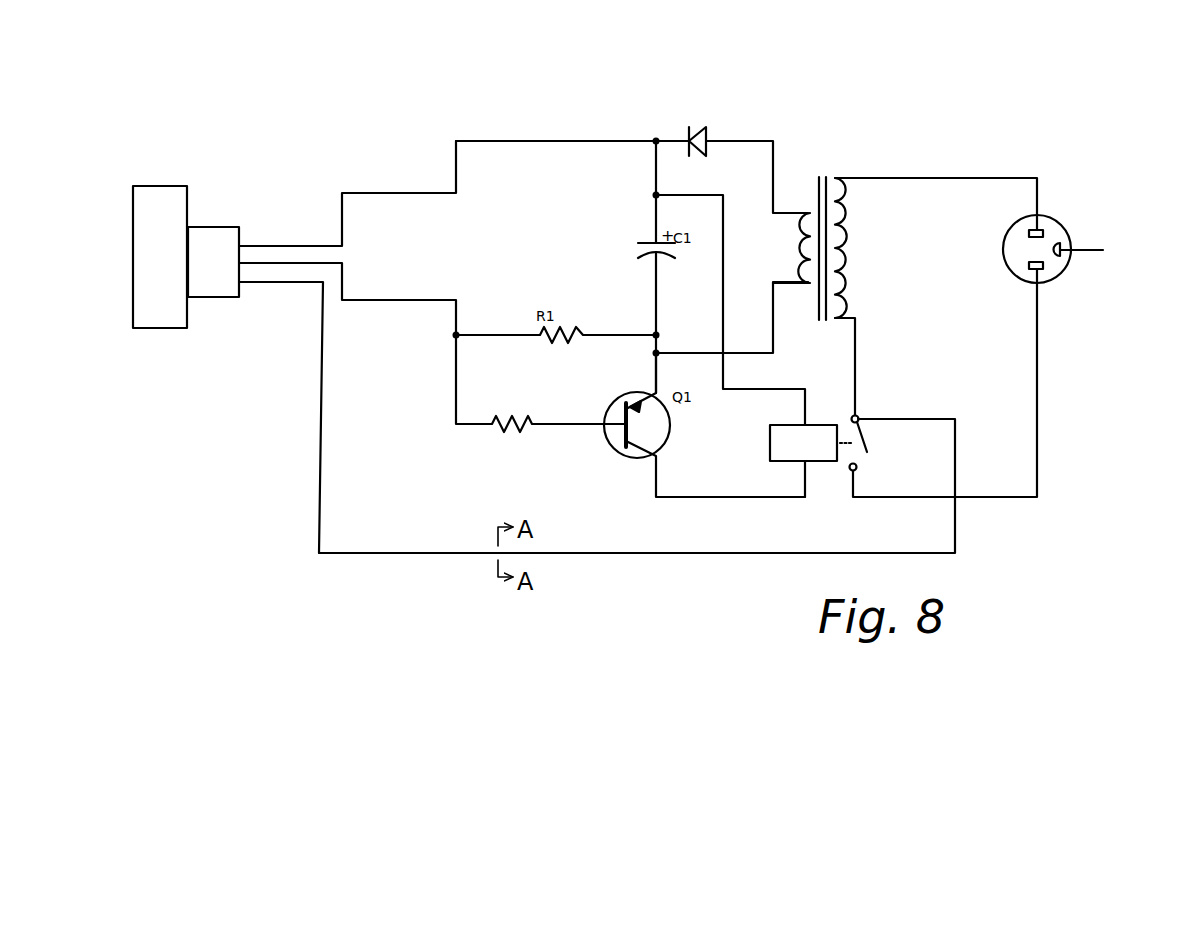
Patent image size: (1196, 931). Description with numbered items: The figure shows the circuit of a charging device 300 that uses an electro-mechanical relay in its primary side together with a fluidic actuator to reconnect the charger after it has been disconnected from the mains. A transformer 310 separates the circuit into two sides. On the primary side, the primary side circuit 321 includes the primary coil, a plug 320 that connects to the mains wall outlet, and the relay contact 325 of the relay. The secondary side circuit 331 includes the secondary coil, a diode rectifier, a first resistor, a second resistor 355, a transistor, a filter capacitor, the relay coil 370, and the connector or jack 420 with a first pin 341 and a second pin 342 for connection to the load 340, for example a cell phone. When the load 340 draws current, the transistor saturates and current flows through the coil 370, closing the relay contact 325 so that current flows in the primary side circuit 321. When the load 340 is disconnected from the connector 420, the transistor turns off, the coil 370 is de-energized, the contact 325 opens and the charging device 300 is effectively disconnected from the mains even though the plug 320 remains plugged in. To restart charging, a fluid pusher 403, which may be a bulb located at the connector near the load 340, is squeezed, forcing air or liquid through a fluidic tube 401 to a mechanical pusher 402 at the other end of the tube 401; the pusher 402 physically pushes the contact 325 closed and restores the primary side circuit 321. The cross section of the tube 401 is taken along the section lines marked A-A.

The charging device 300 is at (884, 98).
The transformer 310 is at (828, 174).
The plug 320 is at (1068, 236).
The primary side circuit 321 is at (1037, 430).
The relay contact 325 is at (873, 457).
The secondary side circuit 331 is at (522, 140).
The load 340 is at (155, 185).
The first pin 341 is at (286, 245).
The second pin 342 is at (322, 263).
The second resistor 355 is at (523, 417).
The coil 370 is at (770, 430).
The fluidic tube 401 is at (625, 556).
The mechanical pusher 402 is at (860, 414).
The fluid pusher 403 is at (249, 291).
The connector or jack 420 is at (222, 226).